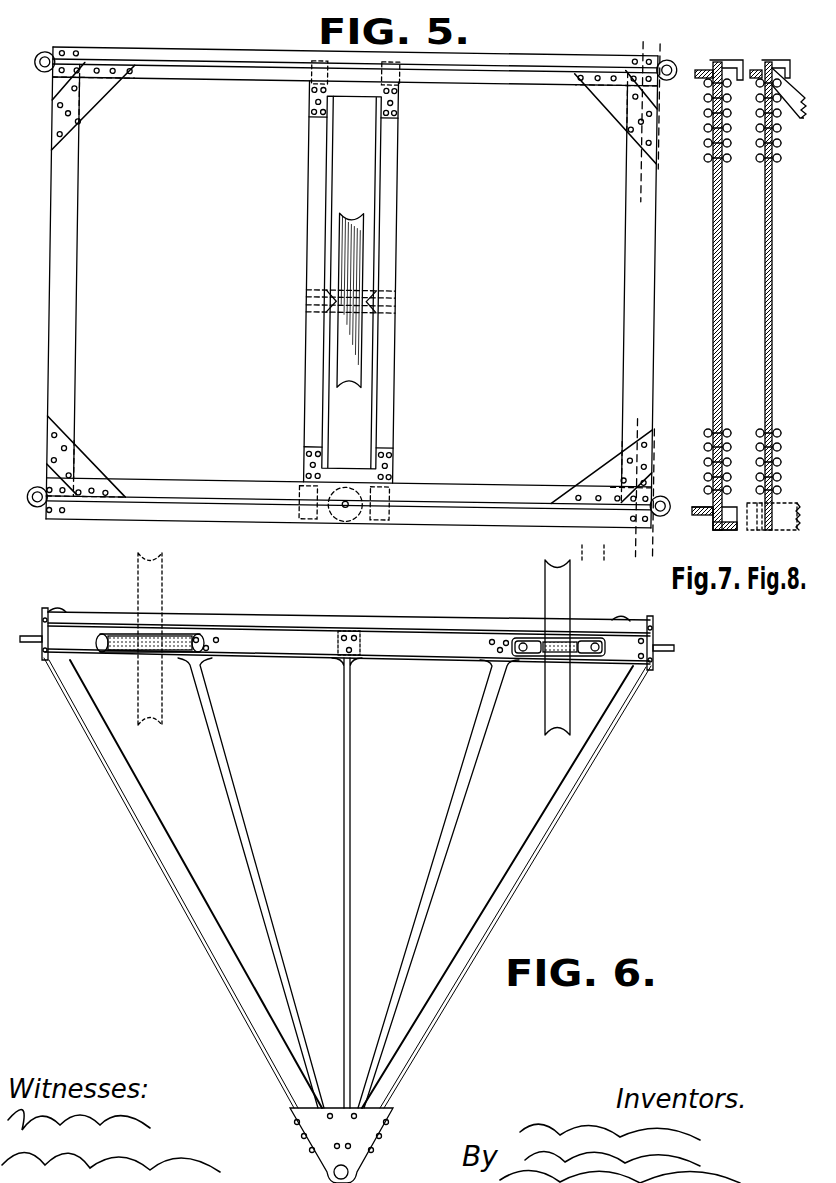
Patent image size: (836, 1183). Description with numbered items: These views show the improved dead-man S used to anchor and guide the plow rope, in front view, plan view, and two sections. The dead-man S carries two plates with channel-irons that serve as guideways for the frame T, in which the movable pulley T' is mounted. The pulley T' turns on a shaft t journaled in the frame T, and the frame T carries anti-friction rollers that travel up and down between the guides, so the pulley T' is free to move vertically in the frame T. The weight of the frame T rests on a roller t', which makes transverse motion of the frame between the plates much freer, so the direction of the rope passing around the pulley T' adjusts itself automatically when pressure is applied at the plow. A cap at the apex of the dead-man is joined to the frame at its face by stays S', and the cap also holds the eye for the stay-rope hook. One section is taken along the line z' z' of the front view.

In FIG. 5, the dead-man S is at (349, 285).
In FIG. 6, the dead-man S is at (343, 720).
In FIG. 6, the stays S' is at (347, 920).
In FIG. 5, the frame T is at (372, 282).
In FIG. 5, the movable pulley T' is at (382, 284).
In FIG. 6, the movable pulley T' is at (370, 644).
In FIG. 5, the shaft t is at (367, 299).
In FIG. 6, the roller t' is at (336, 672).
In FIG. 5, the section line z' z' is at (658, 295).
In FIG. 6, the section line z' z' is at (600, 557).